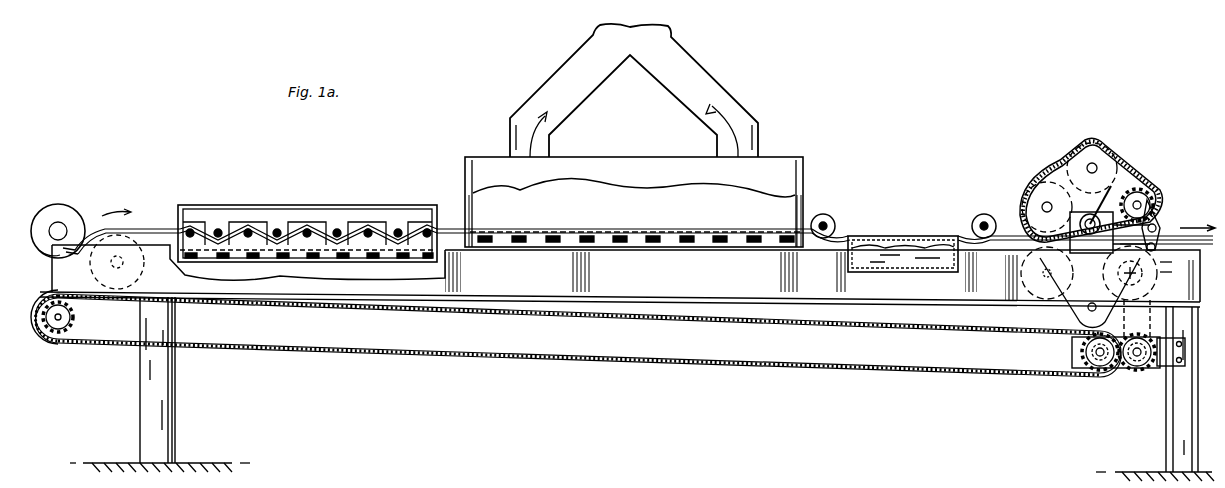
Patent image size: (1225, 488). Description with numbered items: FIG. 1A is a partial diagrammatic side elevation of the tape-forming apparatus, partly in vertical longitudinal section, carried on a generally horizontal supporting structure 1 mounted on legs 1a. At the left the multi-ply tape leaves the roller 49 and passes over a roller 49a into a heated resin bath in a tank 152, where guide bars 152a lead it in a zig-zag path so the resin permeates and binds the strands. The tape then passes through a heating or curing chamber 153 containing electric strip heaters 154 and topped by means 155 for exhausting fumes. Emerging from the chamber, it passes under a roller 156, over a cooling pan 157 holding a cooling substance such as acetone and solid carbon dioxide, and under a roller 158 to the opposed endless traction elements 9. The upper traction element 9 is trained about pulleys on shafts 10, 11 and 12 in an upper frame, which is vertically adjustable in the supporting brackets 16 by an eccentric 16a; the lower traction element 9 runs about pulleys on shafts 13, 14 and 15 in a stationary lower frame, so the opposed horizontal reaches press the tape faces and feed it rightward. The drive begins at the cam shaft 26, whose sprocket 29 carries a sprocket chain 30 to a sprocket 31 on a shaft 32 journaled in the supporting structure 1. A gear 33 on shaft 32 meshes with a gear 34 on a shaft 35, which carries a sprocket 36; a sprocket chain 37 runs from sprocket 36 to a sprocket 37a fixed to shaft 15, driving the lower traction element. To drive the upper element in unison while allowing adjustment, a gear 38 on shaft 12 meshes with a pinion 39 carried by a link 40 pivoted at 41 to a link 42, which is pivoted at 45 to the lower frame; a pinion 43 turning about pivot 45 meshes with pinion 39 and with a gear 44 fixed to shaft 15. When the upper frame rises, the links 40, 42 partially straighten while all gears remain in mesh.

The supporting structure 1 is at (533, 292).
The legs 1a is at (152, 397).
The endless traction elements 9 is at (1142, 178).
The shaft 10 is at (1043, 205).
The shaft 11 is at (1097, 164).
The shaft 12 is at (1142, 200).
The shaft 13 is at (1032, 284).
The shaft 14 is at (1095, 300).
The shaft 15 is at (1118, 272).
The supporting brackets 16 is at (1091, 232).
The eccentric 16a is at (1090, 214).
The cam shaft 26 is at (64, 317).
The sprocket 29 is at (52, 306).
The sprocket chain 30 is at (282, 345).
The sprocket 31 is at (1074, 357).
The shaft 32 is at (1094, 360).
The gear 33 is at (1104, 362).
The gear 34 is at (1132, 362).
The shaft 35 is at (1142, 358).
The sprocket 36 is at (1171, 352).
The sprocket chain 37 is at (1155, 320).
The sprocket 37a is at (1181, 280).
The gear 38 is at (1150, 207).
The pinion 39 is at (1158, 224).
The link 40 is at (1118, 226).
The pivot 41 is at (1193, 221).
The link 42 is at (1157, 247).
The pinion 43 is at (1177, 260).
The gear 44 is at (1177, 271).
The pivot 45 is at (1121, 246).
The roller 49 is at (66, 218).
The roller 49a is at (136, 240).
The tank 152 is at (382, 240).
The guide bars 152a is at (276, 231).
The heating or curing chamber 153 is at (690, 172).
The electric strip heaters 154 is at (706, 238).
The means for exhausting fumes 155 is at (712, 97).
The roller 156 is at (832, 222).
The cooling pan 157 is at (855, 262).
The roller 158 is at (978, 220).